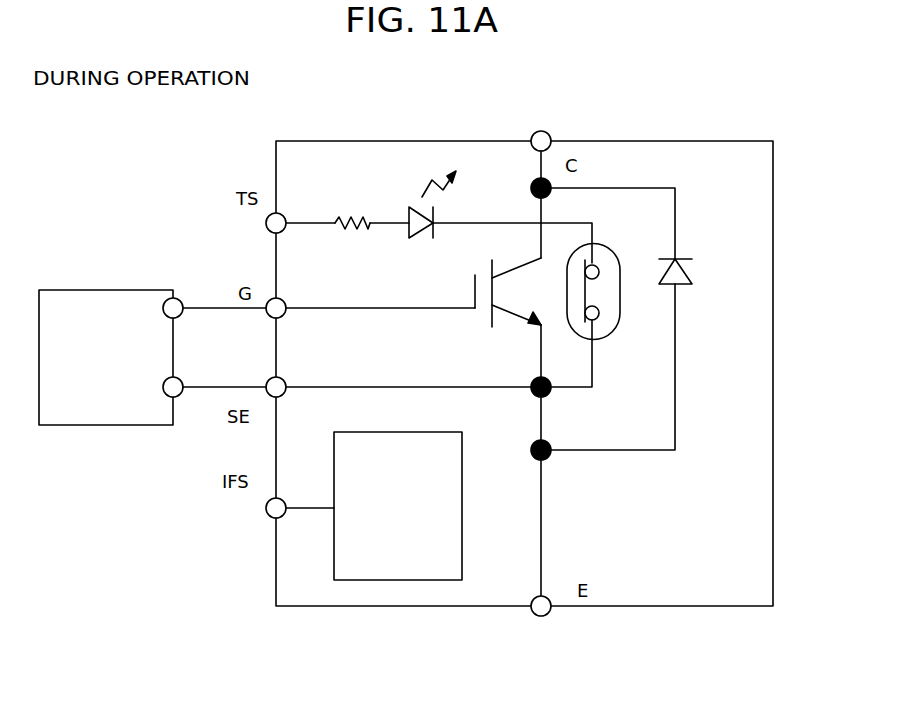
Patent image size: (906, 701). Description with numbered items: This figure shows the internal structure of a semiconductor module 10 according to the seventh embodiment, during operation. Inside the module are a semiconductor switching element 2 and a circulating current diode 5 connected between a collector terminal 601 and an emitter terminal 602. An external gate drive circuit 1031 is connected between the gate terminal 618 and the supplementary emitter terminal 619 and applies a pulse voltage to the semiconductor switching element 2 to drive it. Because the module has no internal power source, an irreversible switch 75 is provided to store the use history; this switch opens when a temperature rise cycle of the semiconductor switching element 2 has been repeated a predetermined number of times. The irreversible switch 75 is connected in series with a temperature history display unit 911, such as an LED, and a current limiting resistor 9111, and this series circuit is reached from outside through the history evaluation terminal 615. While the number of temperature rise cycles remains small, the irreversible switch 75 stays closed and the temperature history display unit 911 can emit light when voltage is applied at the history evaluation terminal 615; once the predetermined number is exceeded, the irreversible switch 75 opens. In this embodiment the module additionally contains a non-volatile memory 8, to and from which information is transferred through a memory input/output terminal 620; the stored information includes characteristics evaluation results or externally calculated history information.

The semiconductor module 10 is at (692, 141).
The semiconductor switching element 2 is at (522, 280).
The circulating current diode 5 is at (698, 270).
The non-volatile memory 8 is at (397, 580).
The irreversible switch 75 is at (610, 245).
The collector terminal 601 is at (548, 134).
The emitter terminal 602 is at (552, 612).
The history evaluation terminal 615 is at (266, 224).
The gate terminal 618 is at (286, 302).
The supplementary emitter terminal 619 is at (286, 381).
The memory input/output terminal 620 is at (266, 508).
The temperature history display unit 911 is at (398, 210).
The current limiting resistor 9111 is at (345, 213).
The gate drive circuit 1031 is at (105, 290).